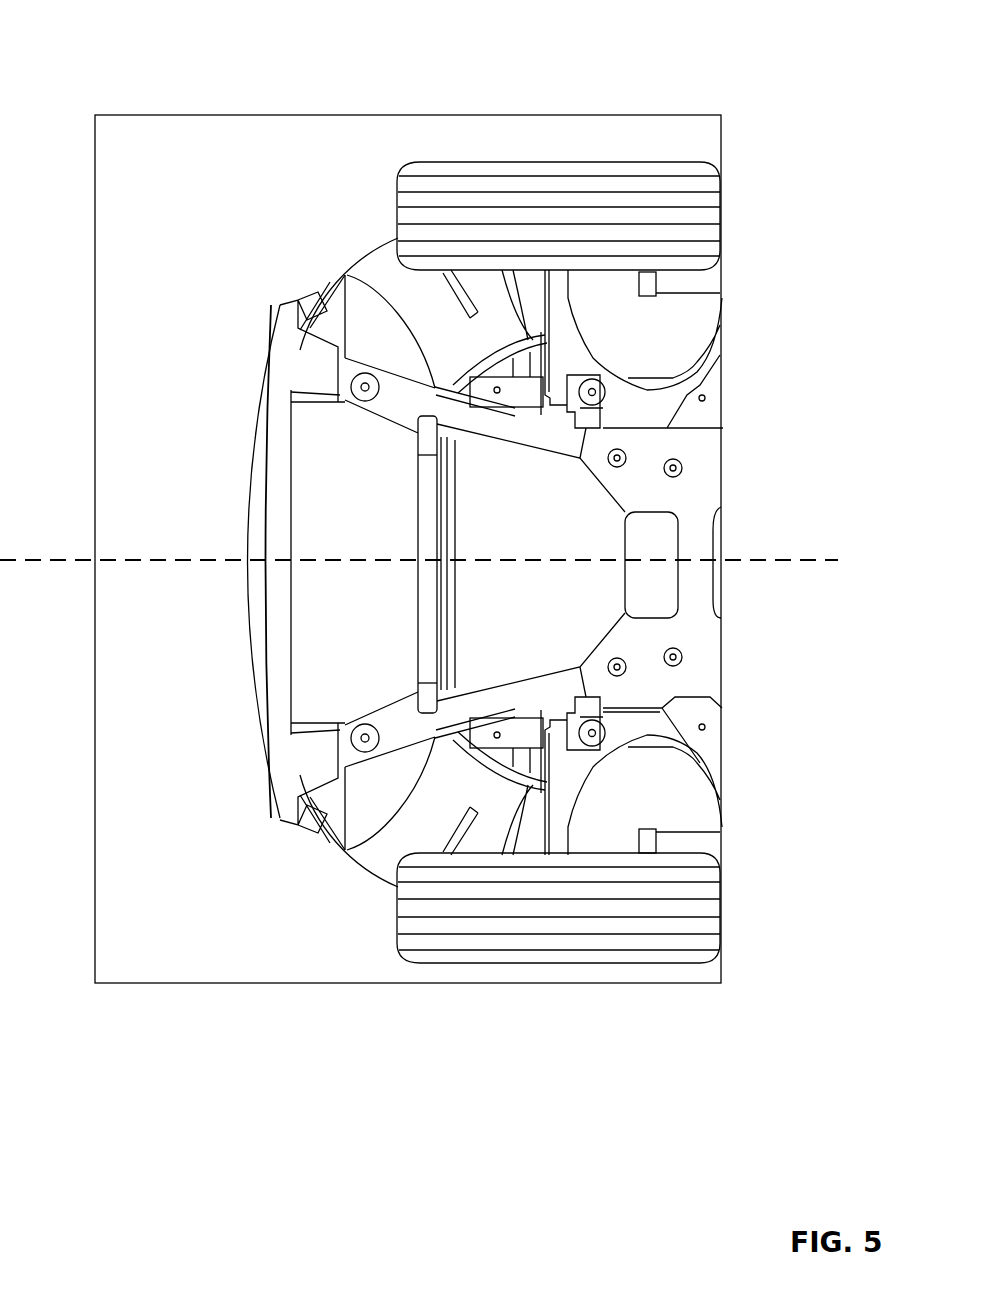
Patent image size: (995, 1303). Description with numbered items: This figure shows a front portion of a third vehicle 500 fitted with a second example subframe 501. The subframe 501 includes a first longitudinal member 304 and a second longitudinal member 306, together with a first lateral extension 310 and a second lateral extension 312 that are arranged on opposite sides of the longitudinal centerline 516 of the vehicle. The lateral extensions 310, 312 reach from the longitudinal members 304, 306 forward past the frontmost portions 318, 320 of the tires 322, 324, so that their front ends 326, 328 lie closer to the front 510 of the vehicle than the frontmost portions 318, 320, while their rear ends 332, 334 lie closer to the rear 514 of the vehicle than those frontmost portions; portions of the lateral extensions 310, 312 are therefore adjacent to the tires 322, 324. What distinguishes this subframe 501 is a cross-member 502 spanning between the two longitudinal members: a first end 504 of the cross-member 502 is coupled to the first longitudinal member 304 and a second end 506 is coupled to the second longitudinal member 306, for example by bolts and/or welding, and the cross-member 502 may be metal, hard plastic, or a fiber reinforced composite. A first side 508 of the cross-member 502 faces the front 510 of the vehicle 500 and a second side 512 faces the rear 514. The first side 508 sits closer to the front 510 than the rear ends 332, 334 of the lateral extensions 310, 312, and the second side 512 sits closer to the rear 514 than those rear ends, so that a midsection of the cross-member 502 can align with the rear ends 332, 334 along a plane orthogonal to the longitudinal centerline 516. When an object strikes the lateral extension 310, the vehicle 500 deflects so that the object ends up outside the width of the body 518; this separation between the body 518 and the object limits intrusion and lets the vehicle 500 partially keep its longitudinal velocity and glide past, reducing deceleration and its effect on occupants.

The third vehicle 500 is at (682, 48).
The second subframe 501 is at (630, 462).
The cross-member 502 is at (420, 528).
The first end of the cross-member 504 is at (531, 468).
The second end of the cross-member 506 is at (418, 698).
The first side of the cross-member 508 is at (418, 478).
The front of the third vehicle 510 is at (243, 528).
The second side of the cross-member 512 is at (457, 494).
The rear of the third vehicle 514 is at (812, 455).
The longitudinal centerline 516 is at (800, 558).
The body 518 is at (366, 248).
The first longitudinal member 304 is at (365, 410).
The second longitudinal member 306 is at (487, 682).
The first lateral extension 310 is at (390, 352).
The second lateral extension 312 is at (380, 796).
The frontmost portion of the first tire 318 is at (397, 215).
The frontmost portion of the second tire 320 is at (397, 920).
The first tire 322 is at (545, 160).
The second tire 324 is at (578, 968).
The front end of the first lateral extension 326 is at (345, 290).
The front end of the second lateral extension 328 is at (340, 786).
The rear end of the first lateral extension 332 is at (482, 444).
The rear end of the second lateral extension 334 is at (482, 712).